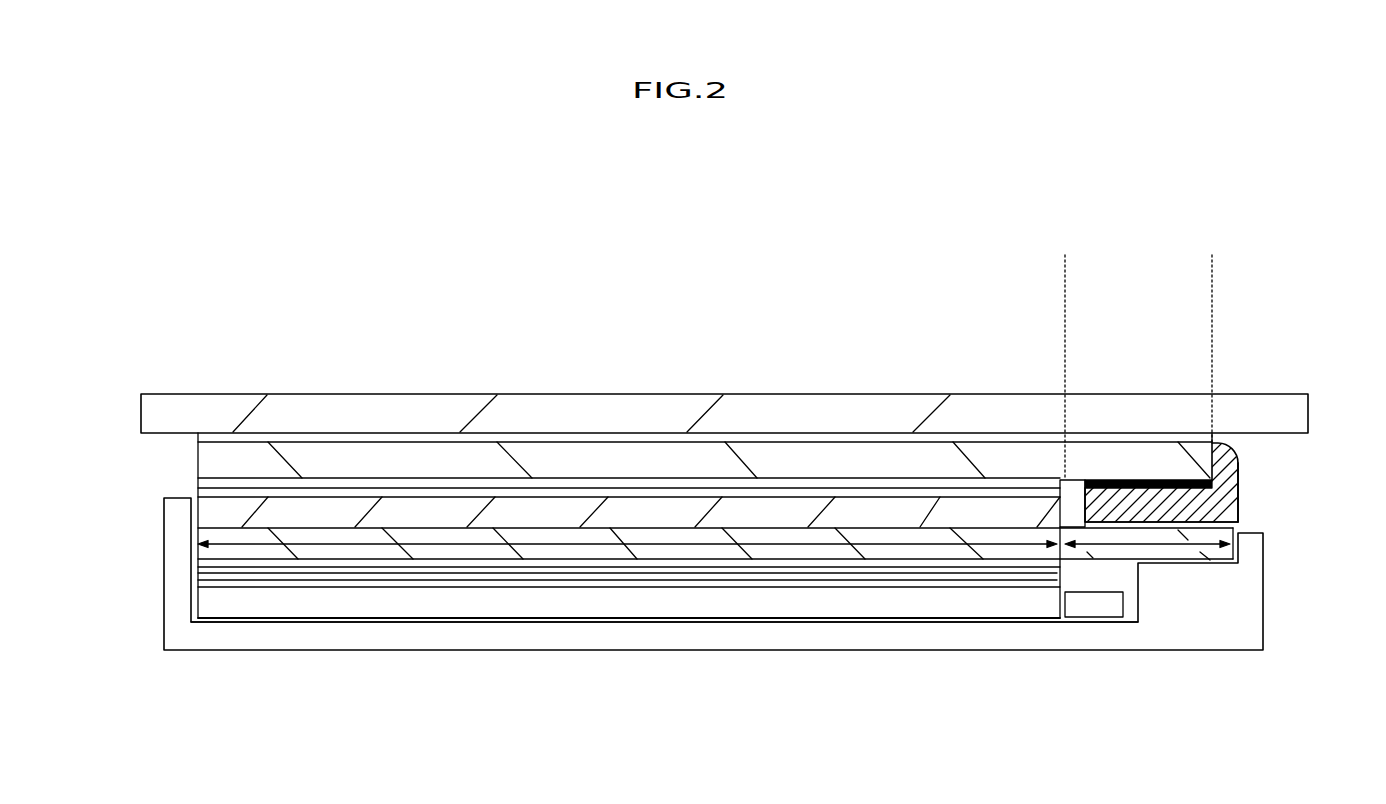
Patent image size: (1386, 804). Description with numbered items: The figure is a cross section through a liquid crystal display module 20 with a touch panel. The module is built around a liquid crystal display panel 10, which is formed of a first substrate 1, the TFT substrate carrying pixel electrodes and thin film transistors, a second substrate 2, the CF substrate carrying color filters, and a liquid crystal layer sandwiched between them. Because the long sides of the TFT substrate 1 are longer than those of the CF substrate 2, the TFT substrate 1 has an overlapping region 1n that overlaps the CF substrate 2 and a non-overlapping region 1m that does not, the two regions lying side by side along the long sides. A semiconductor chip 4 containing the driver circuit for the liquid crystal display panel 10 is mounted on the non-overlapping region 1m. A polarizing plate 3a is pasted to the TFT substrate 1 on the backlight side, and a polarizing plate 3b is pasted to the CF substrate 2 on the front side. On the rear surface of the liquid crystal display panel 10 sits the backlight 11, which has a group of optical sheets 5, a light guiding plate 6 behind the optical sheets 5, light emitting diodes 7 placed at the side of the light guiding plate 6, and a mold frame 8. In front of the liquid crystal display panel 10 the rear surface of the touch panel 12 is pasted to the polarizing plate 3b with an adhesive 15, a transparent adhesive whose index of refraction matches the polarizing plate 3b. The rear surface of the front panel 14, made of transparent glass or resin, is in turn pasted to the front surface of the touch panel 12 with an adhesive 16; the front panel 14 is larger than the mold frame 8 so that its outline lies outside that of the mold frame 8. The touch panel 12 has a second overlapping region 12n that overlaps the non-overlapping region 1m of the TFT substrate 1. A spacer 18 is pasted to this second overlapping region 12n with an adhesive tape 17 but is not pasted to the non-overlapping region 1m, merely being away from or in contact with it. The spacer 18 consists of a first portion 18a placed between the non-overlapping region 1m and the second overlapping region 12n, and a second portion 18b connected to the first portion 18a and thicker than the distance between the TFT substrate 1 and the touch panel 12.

The first substrate 1 is at (547, 538).
The overlapping region 1n is at (592, 543).
The non-overlapping region 1m is at (1192, 560).
The second substrate 2 is at (620, 515).
The polarizing plate 3a is at (490, 558).
The polarizing plate 3b is at (357, 490).
The semiconductor chip 4 is at (1160, 500).
The group of optical sheets 5 is at (817, 572).
The light guiding plate 6 is at (867, 598).
The light emitting diodes 7 is at (1100, 600).
The mold frame 8 is at (678, 628).
The liquid crystal display panel 10 is at (786, 473).
The backlight 11 is at (920, 632).
The touch panel 12 is at (855, 460).
The second overlapping region 12n is at (1202, 265).
The front panel 14 is at (752, 413).
The adhesive 15 is at (1030, 475).
The adhesive 16 is at (965, 450).
The adhesive tape 17 is at (1130, 520).
The spacer 18 is at (1238, 462).
The first portion 18a is at (1105, 478).
The second portion 18b is at (1237, 497).
The liquid crystal display module 20 is at (204, 365).